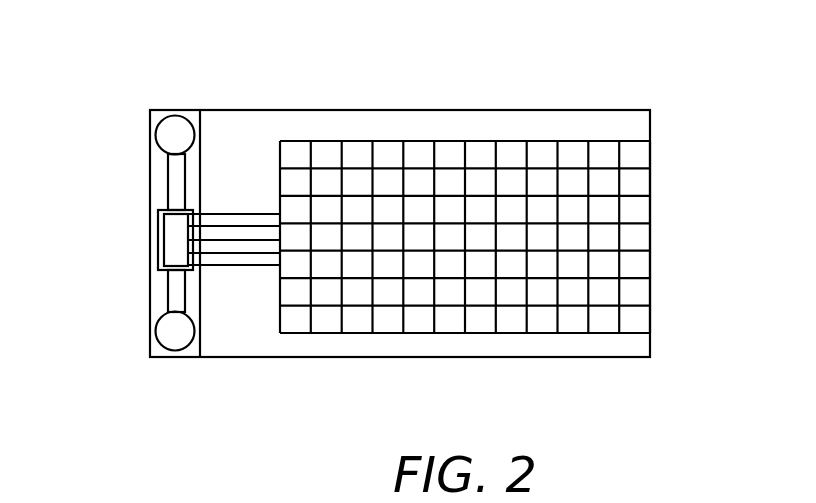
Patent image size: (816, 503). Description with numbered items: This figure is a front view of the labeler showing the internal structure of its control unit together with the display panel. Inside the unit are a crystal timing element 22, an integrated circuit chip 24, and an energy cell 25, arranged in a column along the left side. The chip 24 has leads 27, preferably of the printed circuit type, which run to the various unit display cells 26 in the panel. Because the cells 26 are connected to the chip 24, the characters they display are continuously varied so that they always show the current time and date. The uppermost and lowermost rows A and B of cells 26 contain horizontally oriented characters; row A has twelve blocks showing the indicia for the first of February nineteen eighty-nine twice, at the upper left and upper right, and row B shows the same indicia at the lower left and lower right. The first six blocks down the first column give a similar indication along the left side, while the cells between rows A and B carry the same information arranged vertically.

The crystal timing element 22 is at (170, 125).
The IC 24 is at (173, 235).
The energy cell 25 is at (170, 332).
The unit display cells 26 is at (356, 155).
The leads 27 is at (230, 212).
The row of characters A is at (605, 153).
The row of characters B is at (605, 312).